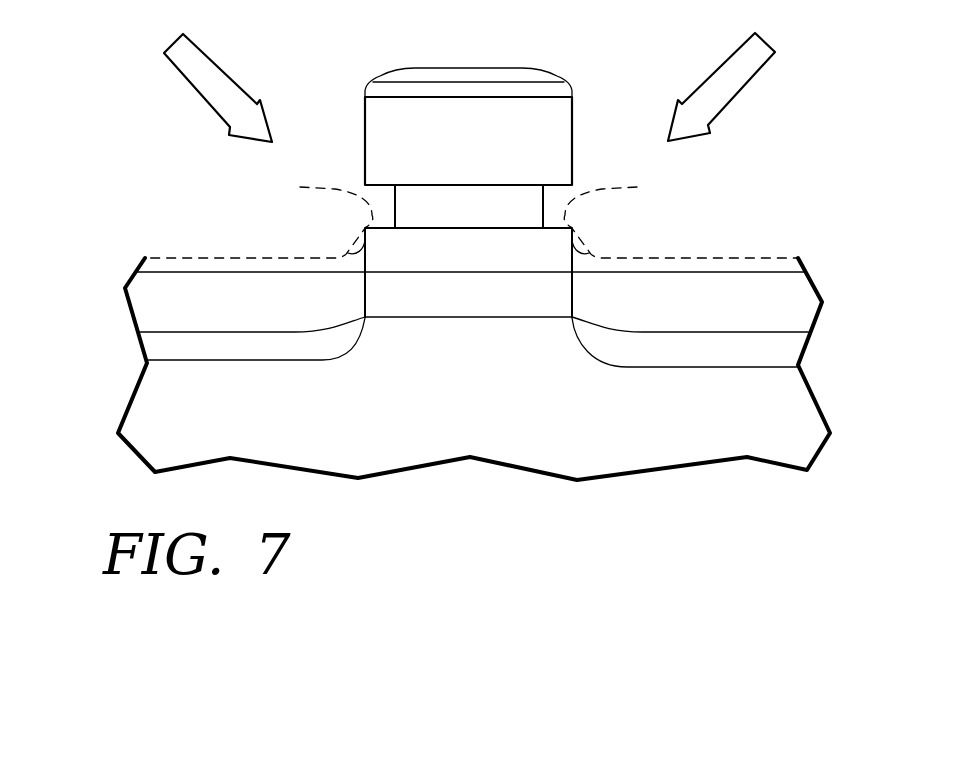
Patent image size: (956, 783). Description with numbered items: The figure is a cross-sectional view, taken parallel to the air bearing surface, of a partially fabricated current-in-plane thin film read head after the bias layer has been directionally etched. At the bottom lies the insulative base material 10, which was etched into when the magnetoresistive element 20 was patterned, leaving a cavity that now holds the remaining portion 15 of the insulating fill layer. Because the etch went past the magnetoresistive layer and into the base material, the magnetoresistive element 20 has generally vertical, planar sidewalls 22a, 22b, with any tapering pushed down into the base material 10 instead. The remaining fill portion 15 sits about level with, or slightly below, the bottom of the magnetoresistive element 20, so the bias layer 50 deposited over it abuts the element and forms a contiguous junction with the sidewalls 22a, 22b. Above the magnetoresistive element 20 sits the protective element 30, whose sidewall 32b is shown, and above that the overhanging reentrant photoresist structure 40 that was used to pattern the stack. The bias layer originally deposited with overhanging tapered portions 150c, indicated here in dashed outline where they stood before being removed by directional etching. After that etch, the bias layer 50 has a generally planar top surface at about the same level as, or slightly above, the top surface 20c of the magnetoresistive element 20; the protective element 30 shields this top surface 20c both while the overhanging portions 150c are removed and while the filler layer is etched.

The base material 10 is at (163, 403).
The remaining portion of the fill layer 15 is at (163, 345).
The bias layer 50 is at (163, 284).
The magnetoresistive element 20 is at (417, 305).
The top surface of the magnetoresistive element 20c is at (506, 268).
The sidewall of the magnetoresistive element 22a is at (365, 292).
The sidewall of the magnetoresistive element 22b is at (572, 292).
The protective element 30 is at (465, 245).
The sidewall of the protective element 32b is at (350, 253).
The reentrant photoresist structure 40 is at (495, 115).
The overhanging tapered portions of the bias layer 150c is at (471, 214).